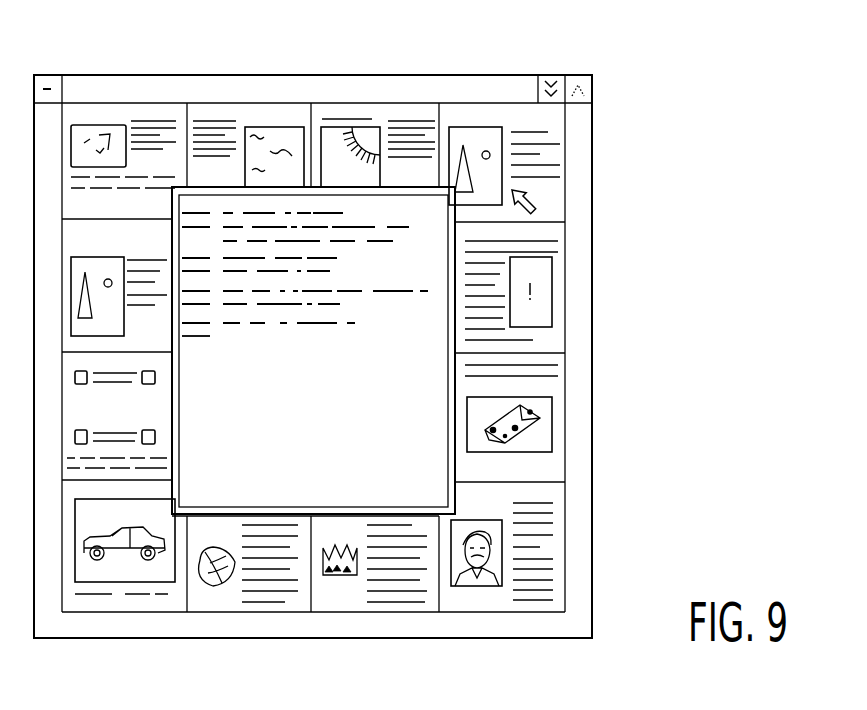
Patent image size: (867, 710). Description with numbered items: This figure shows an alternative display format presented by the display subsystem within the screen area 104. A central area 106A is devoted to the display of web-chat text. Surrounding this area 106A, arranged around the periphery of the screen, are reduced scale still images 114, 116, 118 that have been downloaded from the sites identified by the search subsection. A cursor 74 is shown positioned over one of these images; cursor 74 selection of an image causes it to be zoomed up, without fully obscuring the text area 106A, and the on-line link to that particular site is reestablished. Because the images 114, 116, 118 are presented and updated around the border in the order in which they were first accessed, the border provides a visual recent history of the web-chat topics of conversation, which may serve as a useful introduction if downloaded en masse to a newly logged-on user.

The screen area 104 is at (583, 541).
The reduced scale still image 114 is at (276, 127).
The reduced scale still image 116 is at (381, 113).
The reduced scale still image 118 is at (509, 118).
The cursor 74 is at (536, 205).
The area for display of web-chat 106A is at (370, 449).